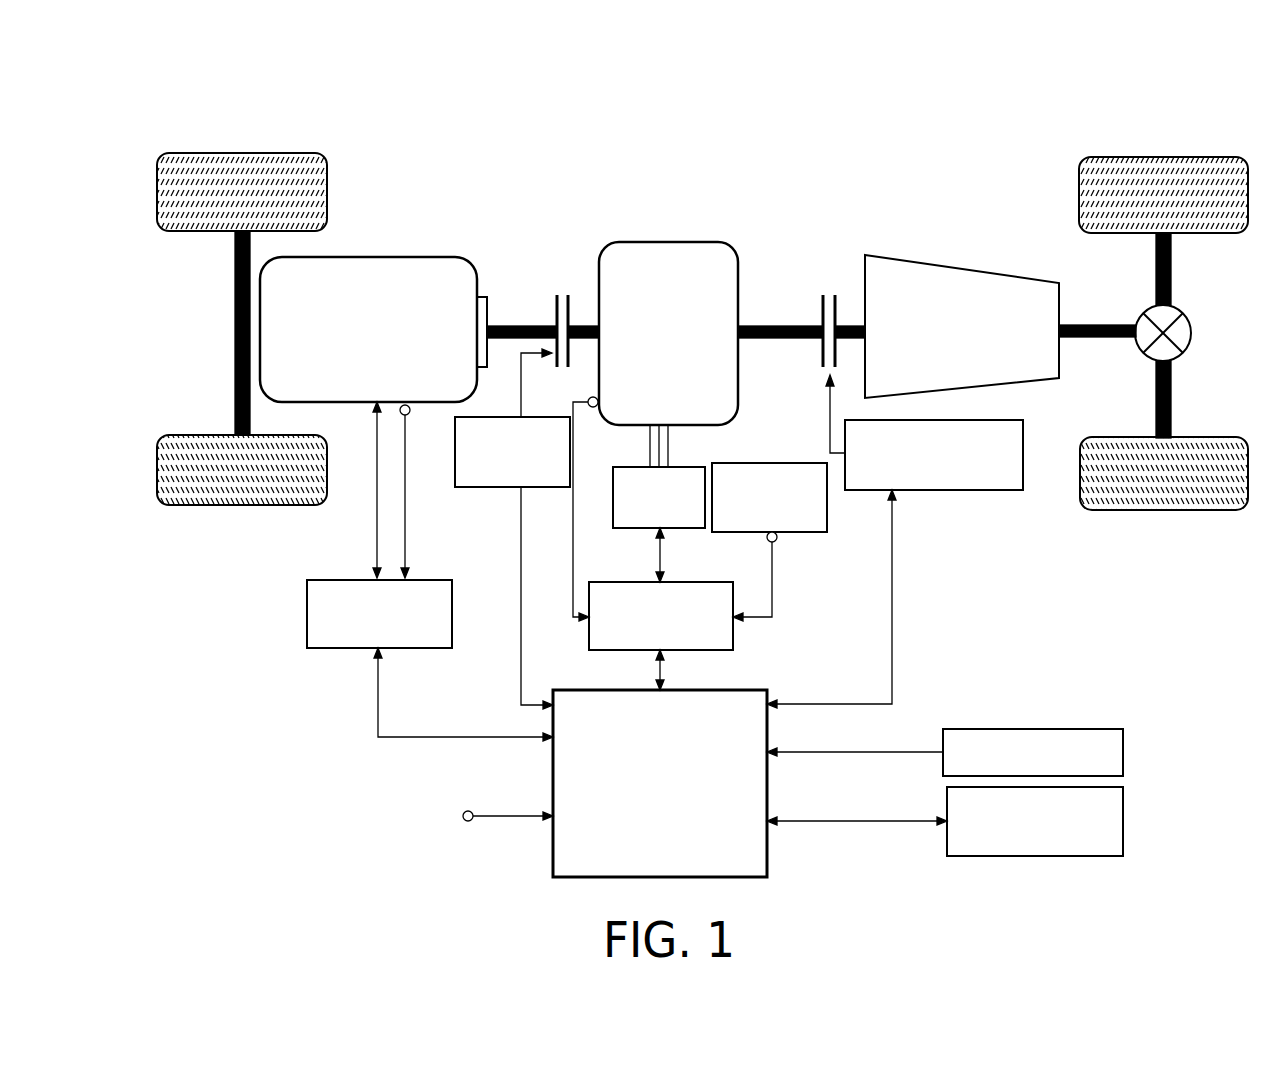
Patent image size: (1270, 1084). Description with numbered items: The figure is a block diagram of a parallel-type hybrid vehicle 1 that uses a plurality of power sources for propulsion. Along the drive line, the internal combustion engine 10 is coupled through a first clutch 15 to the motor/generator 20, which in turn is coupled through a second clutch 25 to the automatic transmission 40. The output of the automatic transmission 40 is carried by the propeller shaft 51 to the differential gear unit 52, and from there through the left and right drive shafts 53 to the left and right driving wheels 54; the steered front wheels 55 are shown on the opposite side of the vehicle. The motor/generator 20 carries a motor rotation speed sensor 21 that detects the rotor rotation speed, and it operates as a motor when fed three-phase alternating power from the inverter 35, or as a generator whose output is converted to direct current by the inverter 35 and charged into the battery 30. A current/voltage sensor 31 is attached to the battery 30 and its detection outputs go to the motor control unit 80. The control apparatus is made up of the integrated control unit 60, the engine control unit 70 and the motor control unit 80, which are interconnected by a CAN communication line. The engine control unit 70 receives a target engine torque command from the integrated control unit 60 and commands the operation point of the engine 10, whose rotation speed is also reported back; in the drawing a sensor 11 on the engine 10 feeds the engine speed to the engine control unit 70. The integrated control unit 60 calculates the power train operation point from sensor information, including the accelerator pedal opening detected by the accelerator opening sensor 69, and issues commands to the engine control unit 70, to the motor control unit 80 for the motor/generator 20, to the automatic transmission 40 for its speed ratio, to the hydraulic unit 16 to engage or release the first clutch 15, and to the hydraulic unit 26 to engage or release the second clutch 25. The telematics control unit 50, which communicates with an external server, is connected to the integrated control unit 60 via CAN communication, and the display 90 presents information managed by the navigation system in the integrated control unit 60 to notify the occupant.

The hybrid vehicle 1 is at (261, 119).
The internal combustion engine 10 is at (386, 257).
The engine rotation speed sensor 11 is at (408, 415).
The first clutch 15 is at (556, 296).
The hydraulic unit 16 is at (486, 488).
The motor/generator 20 is at (614, 242).
The motor rotation speed sensor 21 is at (594, 408).
The second clutch 25 is at (822, 295).
The hydraulic unit 26 is at (857, 491).
The battery 30 is at (806, 533).
The current/voltage sensor 31 is at (767, 538).
The inverter 35 is at (617, 530).
The automatic transmission 40 is at (966, 268).
The telematics control unit 50 is at (1125, 808).
The propeller shaft 51 is at (1121, 324).
The differential gear unit 52 is at (1192, 333).
The drive shaft 53 is at (1172, 272).
The driving wheels 54 is at (1210, 157).
The steered front wheels 55 is at (186, 152).
The integrated control unit 60 is at (552, 840).
The accelerator opening sensor 69 is at (462, 816).
The engine control unit 70 is at (303, 650).
The motor control unit 80 is at (734, 636).
The display 90 is at (1125, 752).